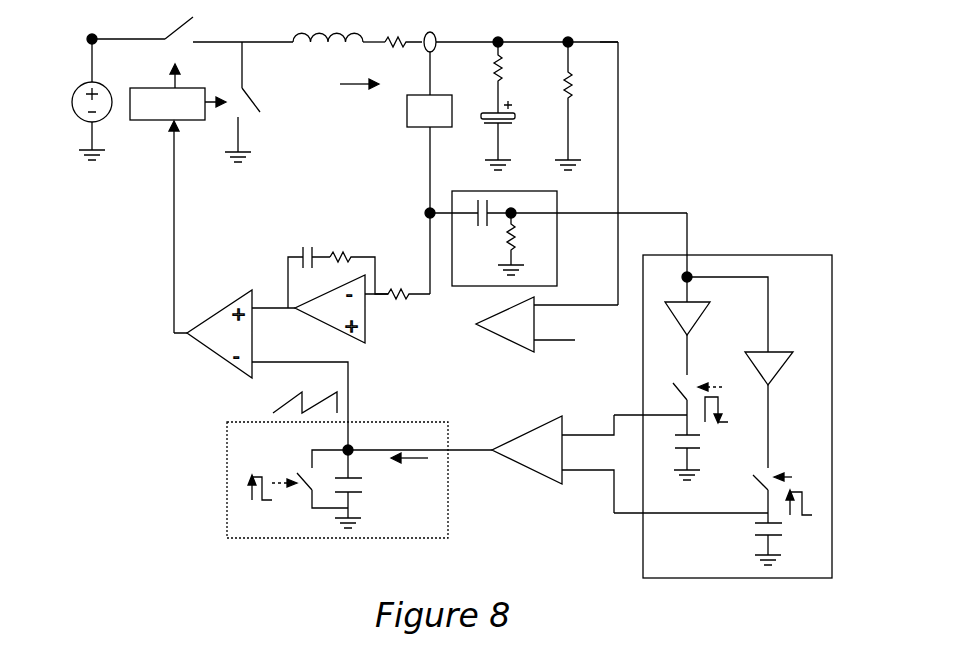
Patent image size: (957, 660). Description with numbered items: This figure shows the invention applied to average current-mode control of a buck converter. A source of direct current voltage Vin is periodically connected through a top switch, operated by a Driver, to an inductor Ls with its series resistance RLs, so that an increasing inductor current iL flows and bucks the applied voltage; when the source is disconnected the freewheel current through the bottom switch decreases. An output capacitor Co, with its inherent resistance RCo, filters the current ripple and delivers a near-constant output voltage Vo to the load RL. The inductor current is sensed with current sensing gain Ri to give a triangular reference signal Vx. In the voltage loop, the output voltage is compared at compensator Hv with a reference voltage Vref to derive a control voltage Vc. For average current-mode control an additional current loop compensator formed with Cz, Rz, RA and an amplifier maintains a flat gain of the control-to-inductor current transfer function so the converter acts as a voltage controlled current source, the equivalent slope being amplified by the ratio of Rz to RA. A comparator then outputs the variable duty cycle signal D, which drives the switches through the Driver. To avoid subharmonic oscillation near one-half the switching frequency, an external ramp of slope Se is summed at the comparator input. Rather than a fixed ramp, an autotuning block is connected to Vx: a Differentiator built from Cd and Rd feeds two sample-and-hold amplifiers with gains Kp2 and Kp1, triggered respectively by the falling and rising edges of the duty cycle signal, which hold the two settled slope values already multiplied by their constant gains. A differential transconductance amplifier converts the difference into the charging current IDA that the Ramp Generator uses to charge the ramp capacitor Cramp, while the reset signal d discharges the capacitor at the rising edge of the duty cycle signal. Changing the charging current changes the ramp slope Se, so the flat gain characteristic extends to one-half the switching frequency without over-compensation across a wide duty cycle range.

The DC voltage source Vin is at (79, 96).
The switch driver Driver is at (178, 92).
The variable duty cycle signal D is at (157, 227).
The inductor Ls is at (328, 53).
The inductor series resistance RLs is at (398, 55).
The inductor current iL is at (359, 94).
The current sensing gain Ri is at (429, 122).
The capacitor inherent resistance RCo is at (520, 77).
The output capacitor Co is at (515, 135).
The load RL is at (581, 106).
The output voltage Vo is at (626, 47).
The differentiator Differentiator is at (442, 200).
The reference voltage Vx is at (437, 250).
The differentiator capacitor Cd is at (572, 228).
The differentiator resistor Rd is at (522, 241).
The compensator capacitor Cz is at (300, 247).
The compensator feedback resistor Rz is at (357, 259).
The compensator input resistor RA is at (397, 281).
The compensator Hv is at (547, 324).
The control voltage Vc is at (459, 342).
The reference voltage Vref is at (575, 343).
The sample-and-hold scaling gain Kp2 is at (672, 391).
The sample-and-hold scaling gain Kp1 is at (713, 458).
The external ramp generator Ramp Generator is at (337, 497).
The ramp capacitor Cramp is at (375, 489).
The duty cycle reset signal d is at (298, 479).
The ramp charging current IDA is at (411, 470).
The external ramp slope Se is at (299, 390).